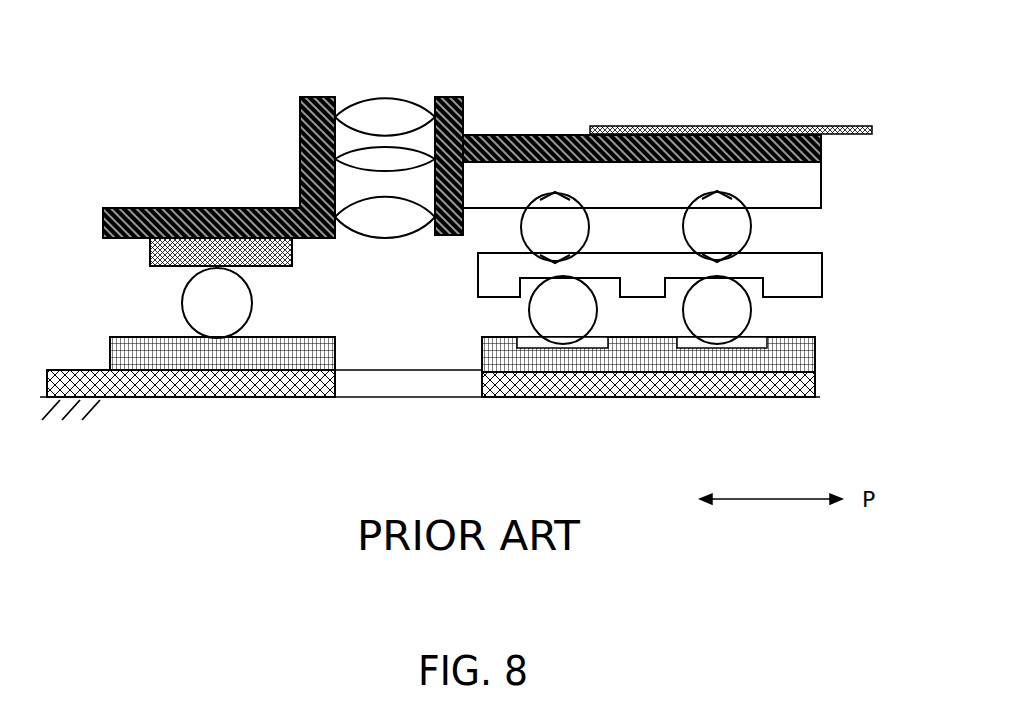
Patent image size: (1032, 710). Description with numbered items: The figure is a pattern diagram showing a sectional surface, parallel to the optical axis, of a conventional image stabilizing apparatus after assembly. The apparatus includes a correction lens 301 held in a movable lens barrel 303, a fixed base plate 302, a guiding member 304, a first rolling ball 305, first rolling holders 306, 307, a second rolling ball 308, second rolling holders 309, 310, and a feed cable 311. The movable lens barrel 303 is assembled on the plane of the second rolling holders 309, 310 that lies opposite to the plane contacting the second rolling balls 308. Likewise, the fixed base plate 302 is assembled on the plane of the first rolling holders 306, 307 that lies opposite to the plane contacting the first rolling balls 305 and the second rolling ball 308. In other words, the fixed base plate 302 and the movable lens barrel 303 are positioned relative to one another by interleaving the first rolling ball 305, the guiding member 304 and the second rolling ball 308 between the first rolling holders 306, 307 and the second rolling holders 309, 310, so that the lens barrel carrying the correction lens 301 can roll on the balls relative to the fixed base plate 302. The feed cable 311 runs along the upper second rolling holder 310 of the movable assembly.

The correction lens 301 is at (390, 103).
The fixed base plate 302 is at (152, 385).
The movable lens barrel 303 is at (302, 150).
The guiding member 304 is at (790, 270).
The first rolling ball 305 is at (717, 323).
The first rolling holder 306 is at (500, 355).
The first rolling holder 307 is at (243, 355).
The second rolling ball 308 is at (210, 283).
The second rolling holder 309 is at (215, 262).
The second rolling holder 310 is at (618, 190).
The feed cable 311 is at (835, 125).